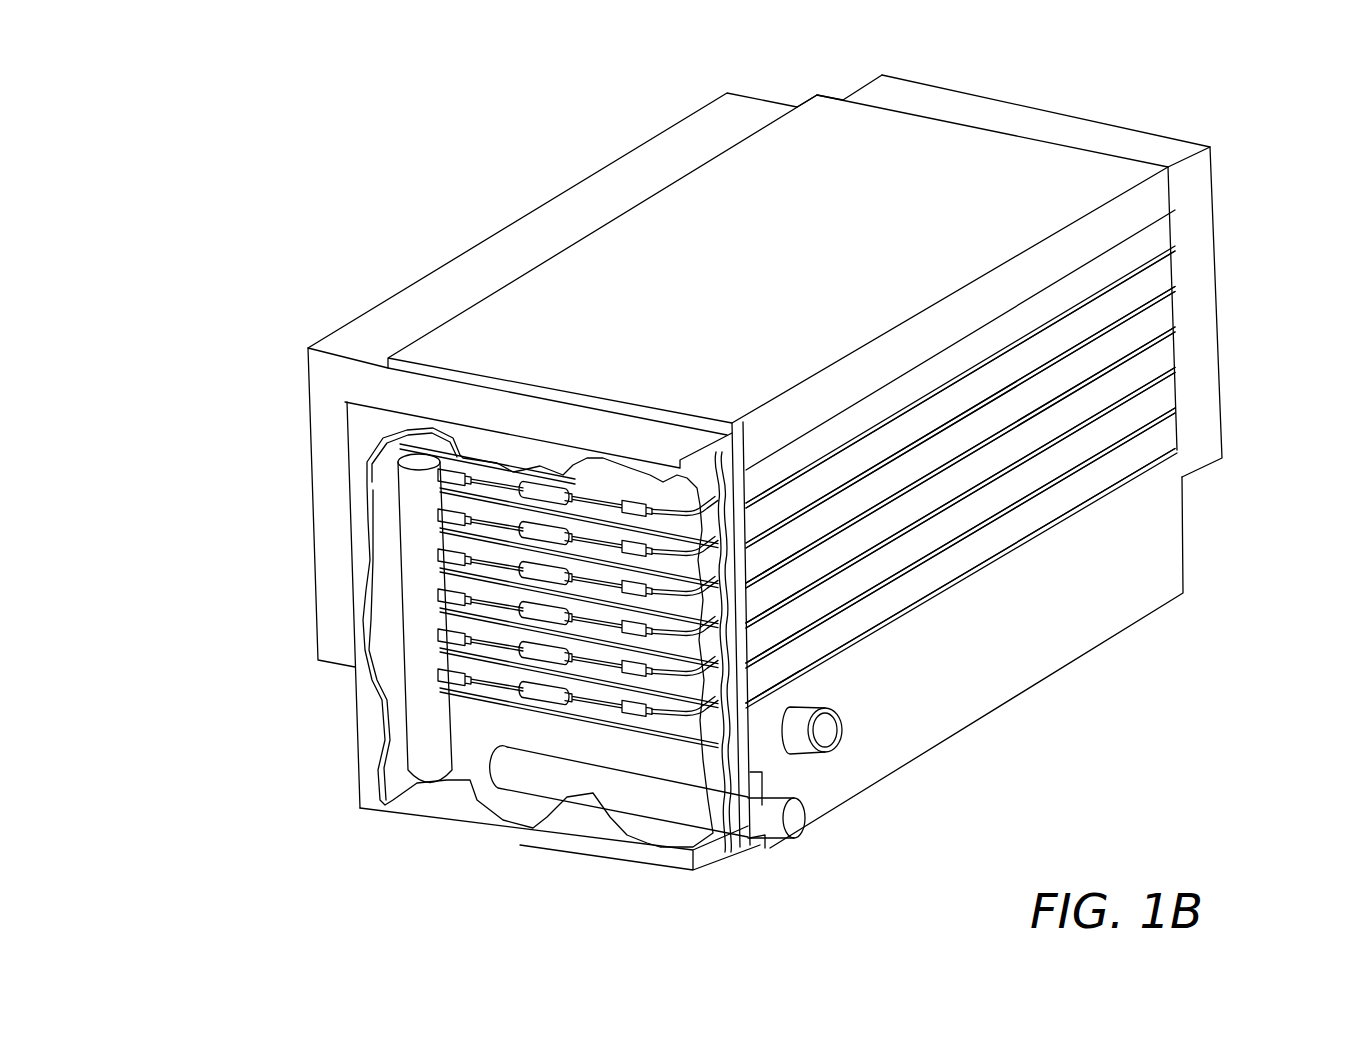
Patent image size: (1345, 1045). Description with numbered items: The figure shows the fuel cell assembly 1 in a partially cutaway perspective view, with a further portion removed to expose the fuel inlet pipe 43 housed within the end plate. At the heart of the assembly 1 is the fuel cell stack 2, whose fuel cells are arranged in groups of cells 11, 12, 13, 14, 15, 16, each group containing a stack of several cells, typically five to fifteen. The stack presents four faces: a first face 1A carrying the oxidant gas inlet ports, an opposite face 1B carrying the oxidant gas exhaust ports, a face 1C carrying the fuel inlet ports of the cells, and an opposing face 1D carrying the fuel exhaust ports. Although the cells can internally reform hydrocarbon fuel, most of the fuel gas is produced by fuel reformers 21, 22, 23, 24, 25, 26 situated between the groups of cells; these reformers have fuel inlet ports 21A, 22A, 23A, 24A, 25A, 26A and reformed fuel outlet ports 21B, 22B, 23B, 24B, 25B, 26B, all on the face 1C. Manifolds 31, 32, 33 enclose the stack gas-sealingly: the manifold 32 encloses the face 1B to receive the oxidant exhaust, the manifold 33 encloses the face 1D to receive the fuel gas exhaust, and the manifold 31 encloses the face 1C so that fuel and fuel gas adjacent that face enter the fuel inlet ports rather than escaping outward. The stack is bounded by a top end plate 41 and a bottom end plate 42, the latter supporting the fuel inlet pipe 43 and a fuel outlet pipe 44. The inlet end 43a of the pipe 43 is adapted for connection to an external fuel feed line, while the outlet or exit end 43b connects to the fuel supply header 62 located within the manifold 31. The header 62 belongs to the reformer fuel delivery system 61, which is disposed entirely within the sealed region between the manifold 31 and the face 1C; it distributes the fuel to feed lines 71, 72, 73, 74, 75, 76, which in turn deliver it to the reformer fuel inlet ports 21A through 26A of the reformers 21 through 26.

The fuel cell assembly 1 is at (783, 458).
The first face of the fuel cell stack 1A is at (1168, 200).
The opposite face of the stack 1B is at (388, 370).
The face of the stack 1C is at (745, 422).
The opposing face of the stack 1D is at (840, 100).
The fuel cell stack 2 is at (1034, 453).
The group of cells 11 is at (1168, 230).
The group of cells 12 is at (1170, 268).
The group of cells 13 is at (1170, 305).
The group of cells 14 is at (1172, 348).
The group of cells 15 is at (1174, 387).
The group of cells 16 is at (1176, 427).
The fuel reformer 21 is at (1172, 248).
The fuel reformer 22 is at (1172, 287).
The fuel reformer 23 is at (1172, 327).
The fuel reformer 24 is at (1174, 367).
The fuel reformer 25 is at (1175, 408).
The fuel reformer 26 is at (1178, 448).
The fuel inlet port 21A is at (702, 507).
The fuel inlet port 22A is at (702, 540).
The fuel inlet port 23A is at (740, 607).
The fuel inlet port 24A is at (740, 637).
The fuel inlet port 25A is at (740, 675).
The fuel inlet port 26A is at (742, 705).
The reformed fuel outlet port 21B is at (432, 447).
The reformed fuel outlet port 22B is at (603, 555).
The reformed fuel outlet port 23B is at (605, 525).
The reformed fuel outlet port 24B is at (493, 600).
The reformed fuel outlet port 25B is at (597, 640).
The reformed fuel outlet port 26B is at (617, 685).
The manifold 31 is at (355, 418).
The manifold 32 is at (500, 250).
The manifold 33 is at (1040, 115).
The top end plate 41 is at (605, 240).
The bottom end plate 42 is at (1118, 623).
The fuel inlet pipe 43 is at (602, 823).
The inlet end 43a is at (797, 823).
The outlet or exit end 43b is at (480, 762).
The fuel outlet pipe 44 is at (832, 730).
The reformer fuel delivery system 61 is at (478, 688).
The fuel supply header 62 is at (400, 475).
The feed line 71 is at (437, 477).
The feed line 72 is at (437, 517).
The feed line 73 is at (437, 557).
The feed line 74 is at (437, 597).
The feed line 75 is at (437, 636).
The feed line 76 is at (437, 676).